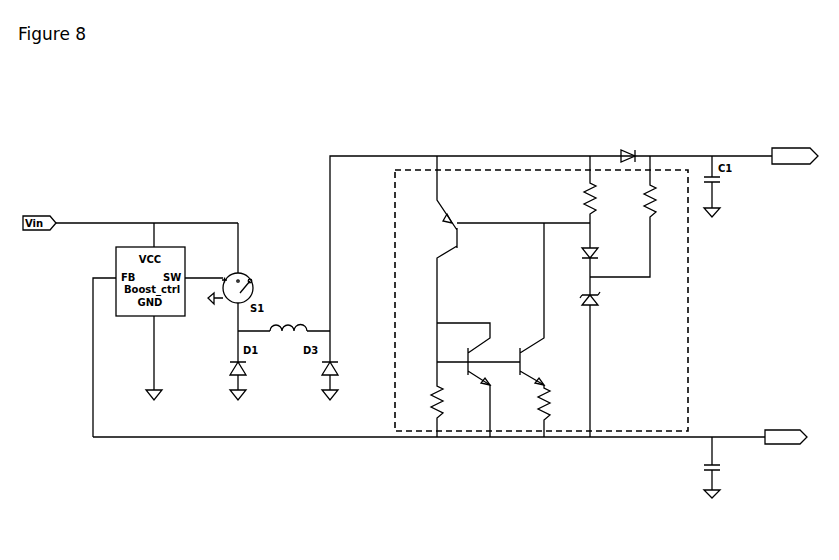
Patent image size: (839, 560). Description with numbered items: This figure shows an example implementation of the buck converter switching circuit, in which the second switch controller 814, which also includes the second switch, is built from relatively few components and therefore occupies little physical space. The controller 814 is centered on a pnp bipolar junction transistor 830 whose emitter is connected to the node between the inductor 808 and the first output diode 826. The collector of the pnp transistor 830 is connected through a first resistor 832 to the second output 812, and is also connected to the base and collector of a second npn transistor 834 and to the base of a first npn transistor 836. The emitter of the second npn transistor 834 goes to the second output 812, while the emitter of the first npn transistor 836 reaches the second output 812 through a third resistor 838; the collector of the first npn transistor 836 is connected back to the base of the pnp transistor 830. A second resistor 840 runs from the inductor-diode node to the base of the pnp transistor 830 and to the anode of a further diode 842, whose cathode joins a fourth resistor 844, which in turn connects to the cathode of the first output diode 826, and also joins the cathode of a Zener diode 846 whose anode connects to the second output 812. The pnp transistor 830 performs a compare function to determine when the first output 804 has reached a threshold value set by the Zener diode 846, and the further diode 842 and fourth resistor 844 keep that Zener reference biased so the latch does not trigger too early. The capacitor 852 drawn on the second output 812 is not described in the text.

The first output 804 is at (790, 150).
The inductor L1 808 is at (300, 323).
The second output 812 is at (785, 444).
The second switch controller 814 is at (690, 353).
The first output diode D2 826 is at (636, 152).
The pnp bipolar junction transistor Q3 830 is at (447, 238).
The resistor R1 832 is at (435, 416).
The second npn BJT Q2 834 is at (471, 375).
The first npn BJT Q1 836 is at (533, 342).
The resistor R3 838 is at (548, 415).
The resistor R2 840 is at (588, 190).
The diode D5 842 is at (590, 252).
The resistor R4 844 is at (657, 190).
The Zener diode D4 846 is at (590, 296).
The capacitor C2 852 is at (715, 470).